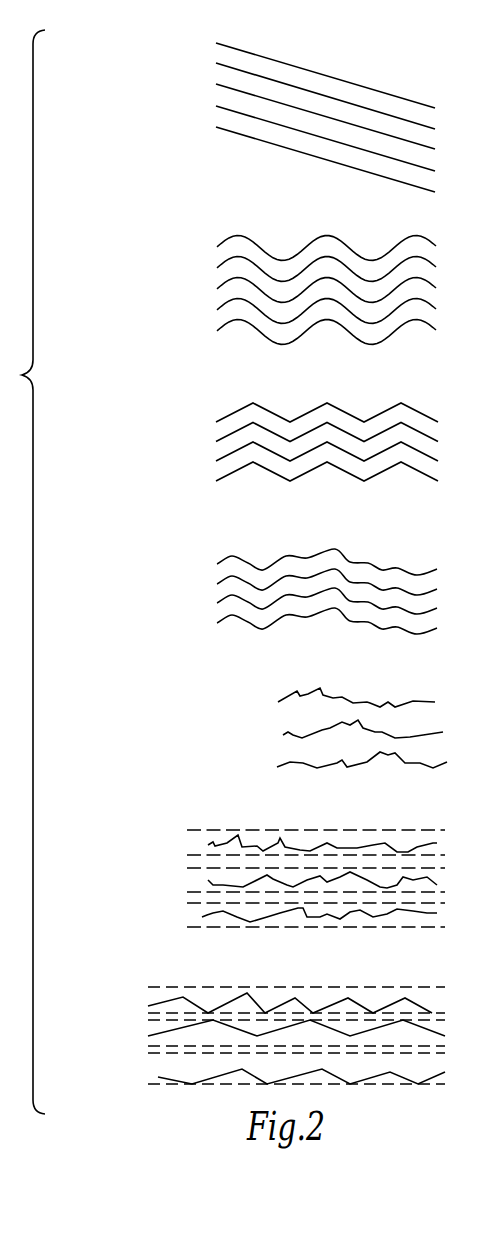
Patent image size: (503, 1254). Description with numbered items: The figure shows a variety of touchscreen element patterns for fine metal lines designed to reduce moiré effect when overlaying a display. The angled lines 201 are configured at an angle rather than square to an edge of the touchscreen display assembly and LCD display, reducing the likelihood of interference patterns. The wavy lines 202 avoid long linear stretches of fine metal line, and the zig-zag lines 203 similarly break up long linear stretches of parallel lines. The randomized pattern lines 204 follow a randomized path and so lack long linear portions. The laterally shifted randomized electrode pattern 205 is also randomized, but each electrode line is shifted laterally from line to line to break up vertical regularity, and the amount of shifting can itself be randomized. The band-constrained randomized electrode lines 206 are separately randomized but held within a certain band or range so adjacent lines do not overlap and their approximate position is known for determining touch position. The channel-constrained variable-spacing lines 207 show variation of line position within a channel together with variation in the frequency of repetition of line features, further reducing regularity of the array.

The angled lines 201 is at (167, 79).
The wavy lines 202 is at (167, 277).
The zig-zag lines 203 is at (167, 440).
The randomized pattern lines 204 is at (168, 577).
The laterally shifted randomized electrode pattern 205 is at (223, 717).
The band-constrained randomized electrode lines 206 is at (148, 864).
The channel-constrained variable-spacing lines 207 is at (112, 1004).